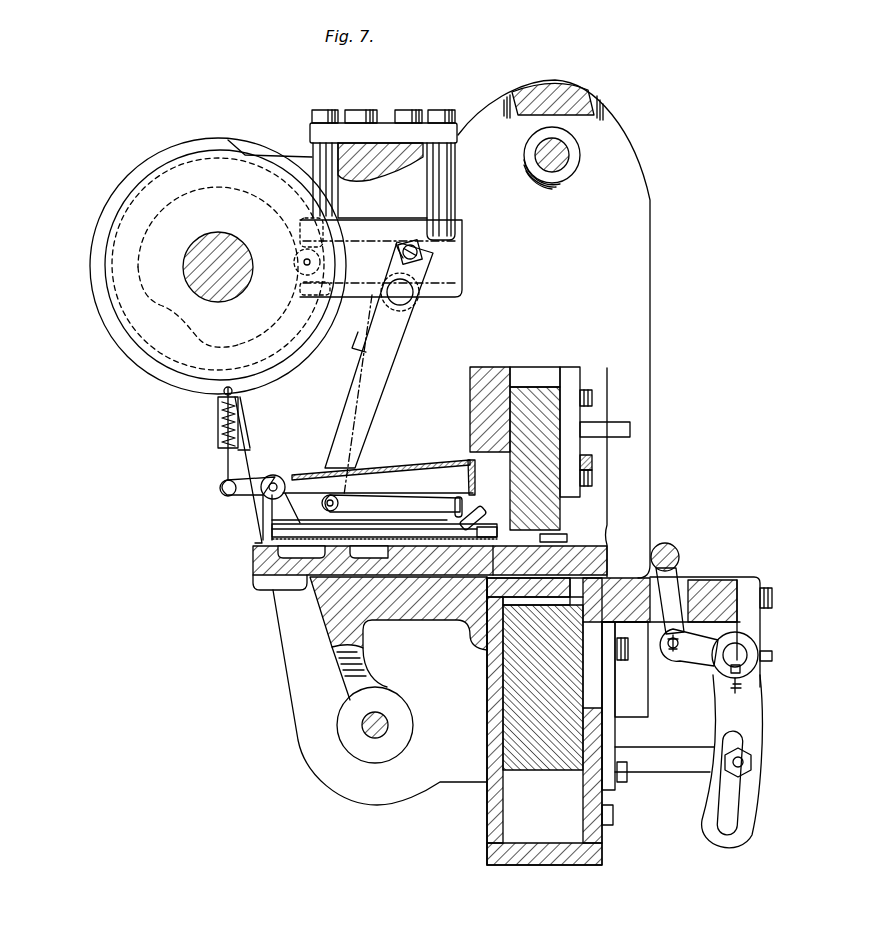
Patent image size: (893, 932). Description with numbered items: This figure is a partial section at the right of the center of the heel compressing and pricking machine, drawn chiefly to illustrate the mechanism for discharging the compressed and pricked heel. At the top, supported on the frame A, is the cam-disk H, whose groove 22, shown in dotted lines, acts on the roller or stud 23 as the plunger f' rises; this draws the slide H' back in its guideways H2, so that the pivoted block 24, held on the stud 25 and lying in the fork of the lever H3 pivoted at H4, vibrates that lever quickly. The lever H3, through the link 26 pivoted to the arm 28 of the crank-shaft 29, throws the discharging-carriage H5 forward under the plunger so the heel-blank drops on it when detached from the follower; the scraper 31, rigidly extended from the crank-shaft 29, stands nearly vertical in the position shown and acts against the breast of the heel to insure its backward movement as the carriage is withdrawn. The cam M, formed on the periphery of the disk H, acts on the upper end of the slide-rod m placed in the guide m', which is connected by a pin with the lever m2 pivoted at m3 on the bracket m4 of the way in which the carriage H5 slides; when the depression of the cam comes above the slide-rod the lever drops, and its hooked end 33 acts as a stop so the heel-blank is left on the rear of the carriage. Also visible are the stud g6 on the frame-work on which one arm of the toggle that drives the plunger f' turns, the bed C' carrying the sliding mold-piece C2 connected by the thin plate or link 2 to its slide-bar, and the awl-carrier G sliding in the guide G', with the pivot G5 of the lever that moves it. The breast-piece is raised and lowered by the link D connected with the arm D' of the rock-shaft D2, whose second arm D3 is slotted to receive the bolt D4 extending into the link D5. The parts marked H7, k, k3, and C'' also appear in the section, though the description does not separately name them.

The frame A is at (439, 329).
The stud g6 is at (570, 157).
The cam M is at (104, 322).
The cam-disk H is at (213, 265).
The groove 22 is at (218, 267).
The hub H7 is at (192, 266).
The roller or stud 23 is at (297, 256).
The guideways H2 is at (380, 225).
The slide H' is at (392, 258).
The lever H3 is at (393, 352).
The pivoted block 24 is at (412, 240).
The stud 25 is at (398, 256).
The pivot H4 is at (410, 298).
The guide m' is at (217, 433).
The bracket m4 is at (267, 512).
The slide-rod m is at (237, 474).
The lever m2 is at (247, 495).
The pivot m3 is at (273, 483).
The hooked end 33 is at (466, 486).
The link 26 is at (391, 505).
The arm 28 is at (462, 501).
The crank-shaft 29 is at (482, 515).
The scraper 31 is at (472, 532).
The discharging-carriage H5 is at (384, 528).
The plunger f' is at (509, 454).
The bolts k3 is at (592, 402).
The bar k is at (590, 458).
The plate or link 2 is at (560, 538).
The bed C' is at (522, 703).
The plate C'' is at (616, 588).
The pivot G5 is at (388, 726).
The awl-carrier G is at (567, 721).
The guide G' is at (557, 854).
The sliding piece of the mold C2 is at (610, 546).
The link D is at (670, 601).
The arm D' is at (687, 661).
The rock-shaft D2 is at (742, 653).
The arm D3 is at (718, 720).
The link D5 is at (662, 752).
The bolt D4 is at (752, 762).